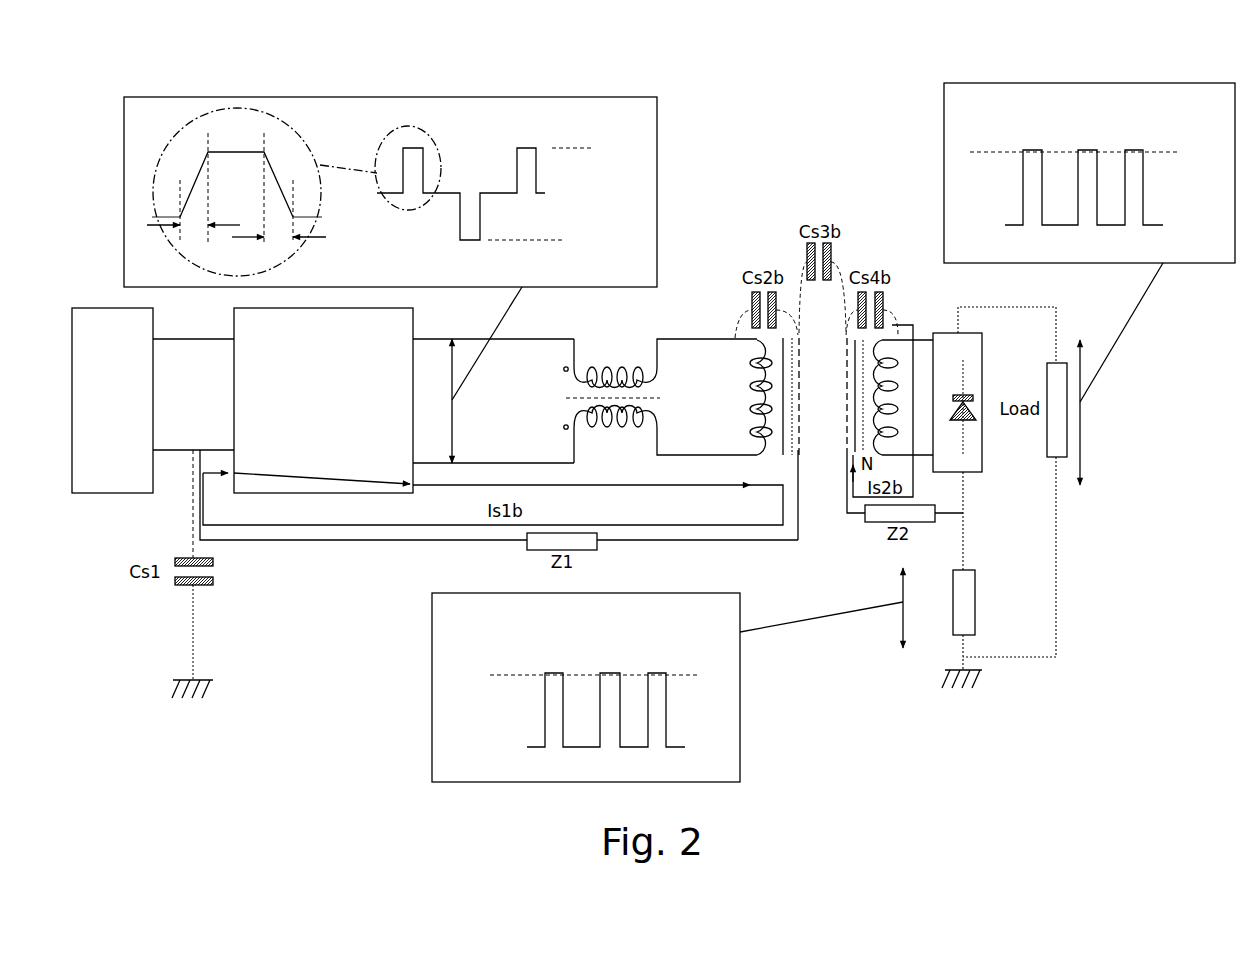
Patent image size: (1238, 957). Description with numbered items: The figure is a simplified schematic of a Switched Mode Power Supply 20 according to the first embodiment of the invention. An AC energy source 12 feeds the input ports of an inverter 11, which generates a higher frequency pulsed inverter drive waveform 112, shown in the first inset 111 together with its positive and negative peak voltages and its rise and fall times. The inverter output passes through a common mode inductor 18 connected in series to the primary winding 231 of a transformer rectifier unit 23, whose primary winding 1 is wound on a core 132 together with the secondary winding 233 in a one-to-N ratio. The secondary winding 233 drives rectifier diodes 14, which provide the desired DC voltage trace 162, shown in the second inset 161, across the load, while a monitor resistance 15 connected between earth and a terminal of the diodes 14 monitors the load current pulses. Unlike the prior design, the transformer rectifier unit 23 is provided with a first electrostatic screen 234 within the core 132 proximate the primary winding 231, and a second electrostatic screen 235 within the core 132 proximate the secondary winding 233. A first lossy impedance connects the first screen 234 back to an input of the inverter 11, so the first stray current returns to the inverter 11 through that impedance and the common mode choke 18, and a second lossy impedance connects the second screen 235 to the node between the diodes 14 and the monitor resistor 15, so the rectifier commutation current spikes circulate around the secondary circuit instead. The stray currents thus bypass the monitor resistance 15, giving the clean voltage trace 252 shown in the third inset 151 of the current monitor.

The first inset 111 is at (425, 192).
The inverter drive waveform 112 is at (537, 175).
The AC energy source 12 is at (132, 337).
The inverter 11 is at (392, 337).
The L1 common mode inductor 18 is at (612, 435).
The primary winding 231 is at (726, 431).
The primary winding turns 1 is at (772, 465).
The first electrostatic screen 234 is at (797, 387).
The second electrostatic screen 235 is at (847, 380).
The core 132 is at (797, 443).
The secondary winding 233 is at (893, 440).
The Dn diodes 14 is at (982, 383).
The Rmon monitor resistance 15 is at (975, 612).
The second inset 161 is at (1058, 173).
The DC voltage trace 162 is at (1145, 192).
The third inset 151 is at (619, 687).
The voltage trace 252 is at (667, 720).
The transformer rectifier unit 23 is at (842, 525).
The Switched Mode Power Supply 20 is at (238, 778).